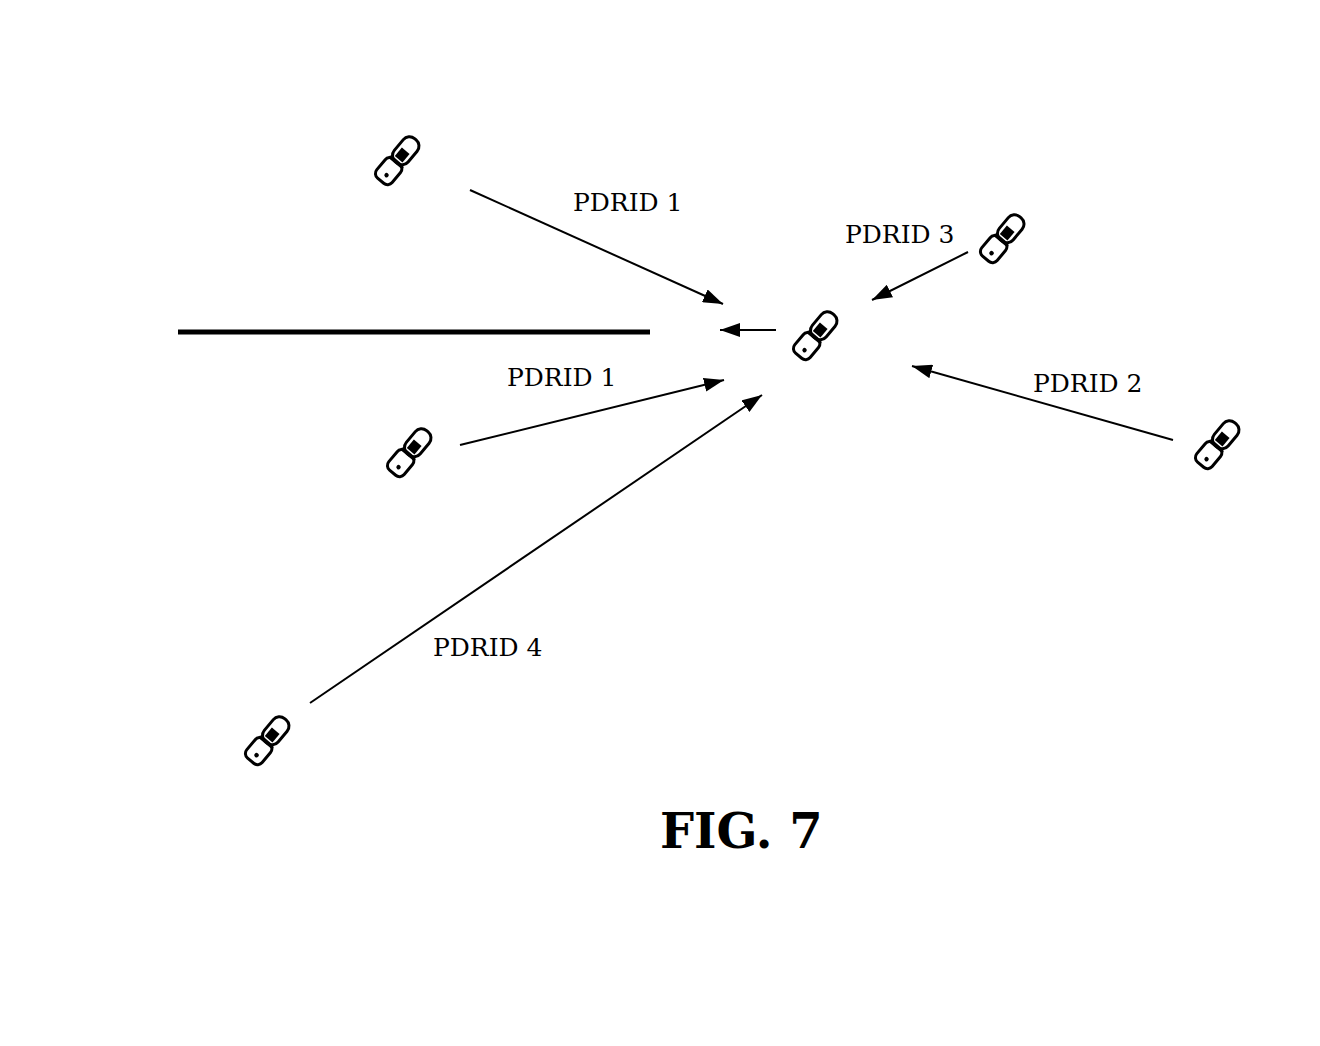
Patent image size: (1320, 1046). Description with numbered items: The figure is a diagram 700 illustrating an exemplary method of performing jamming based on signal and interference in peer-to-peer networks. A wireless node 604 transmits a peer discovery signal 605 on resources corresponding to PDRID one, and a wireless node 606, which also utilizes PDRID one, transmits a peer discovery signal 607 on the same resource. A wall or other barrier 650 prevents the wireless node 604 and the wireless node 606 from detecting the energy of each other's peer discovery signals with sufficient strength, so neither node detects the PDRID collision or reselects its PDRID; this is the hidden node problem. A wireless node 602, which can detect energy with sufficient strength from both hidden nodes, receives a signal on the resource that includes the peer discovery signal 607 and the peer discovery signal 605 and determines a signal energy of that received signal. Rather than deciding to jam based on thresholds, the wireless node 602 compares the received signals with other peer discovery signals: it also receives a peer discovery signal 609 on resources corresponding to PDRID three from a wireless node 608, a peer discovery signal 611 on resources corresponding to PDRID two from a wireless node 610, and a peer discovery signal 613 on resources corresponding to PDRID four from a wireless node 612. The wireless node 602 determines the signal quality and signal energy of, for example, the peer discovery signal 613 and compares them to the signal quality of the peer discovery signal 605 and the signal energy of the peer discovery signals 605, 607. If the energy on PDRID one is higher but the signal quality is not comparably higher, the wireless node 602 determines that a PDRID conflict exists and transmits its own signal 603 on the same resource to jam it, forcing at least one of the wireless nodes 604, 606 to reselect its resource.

The diagram 700 is at (251, 89).
The wall or other barrier 650 is at (414, 306).
The wireless node 602 is at (804, 351).
The signal 603 is at (758, 314).
The wireless node 604 is at (398, 468).
The peer discovery signal 605 is at (592, 418).
The wireless node 606 is at (386, 176).
The peer discovery signal 607 is at (596, 247).
The wireless node 608 is at (991, 254).
The peer discovery signal 609 is at (920, 277).
The wireless node 610 is at (1206, 460).
The peer discovery signal 611 is at (1042, 403).
The wireless node 612 is at (256, 756).
The peer discovery signal 613 is at (536, 549).